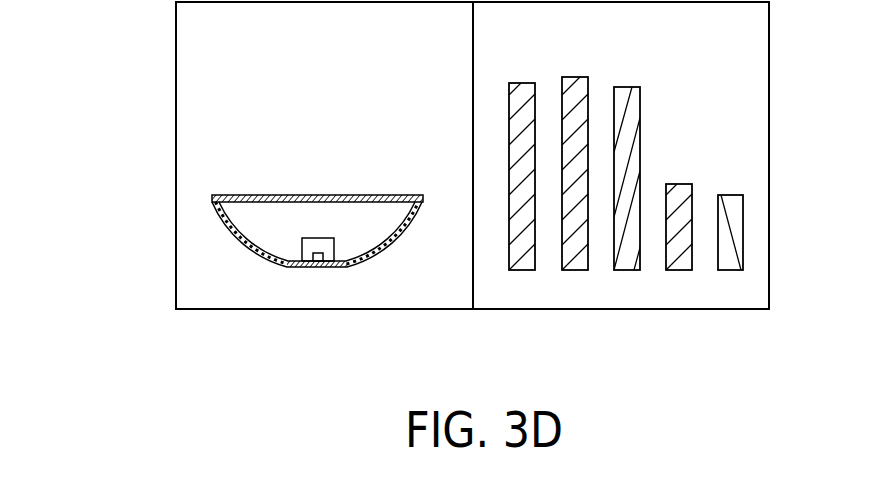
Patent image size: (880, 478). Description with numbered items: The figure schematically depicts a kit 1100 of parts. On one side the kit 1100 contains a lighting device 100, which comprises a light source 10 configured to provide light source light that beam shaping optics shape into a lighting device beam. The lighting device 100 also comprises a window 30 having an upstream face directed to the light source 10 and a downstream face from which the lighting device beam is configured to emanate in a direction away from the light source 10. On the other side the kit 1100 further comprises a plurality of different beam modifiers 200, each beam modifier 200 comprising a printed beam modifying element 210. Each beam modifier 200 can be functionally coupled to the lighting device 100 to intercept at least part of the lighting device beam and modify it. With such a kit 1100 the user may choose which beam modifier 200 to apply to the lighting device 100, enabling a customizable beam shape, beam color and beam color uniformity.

The kit of parts 1100 is at (172, 152).
The lighting device 100 is at (310, 238).
The light source 10 is at (317, 262).
The window 30 is at (375, 194).
The beam modifier 200 is at (626, 199).
The printed beam modifying element 210 is at (730, 196).